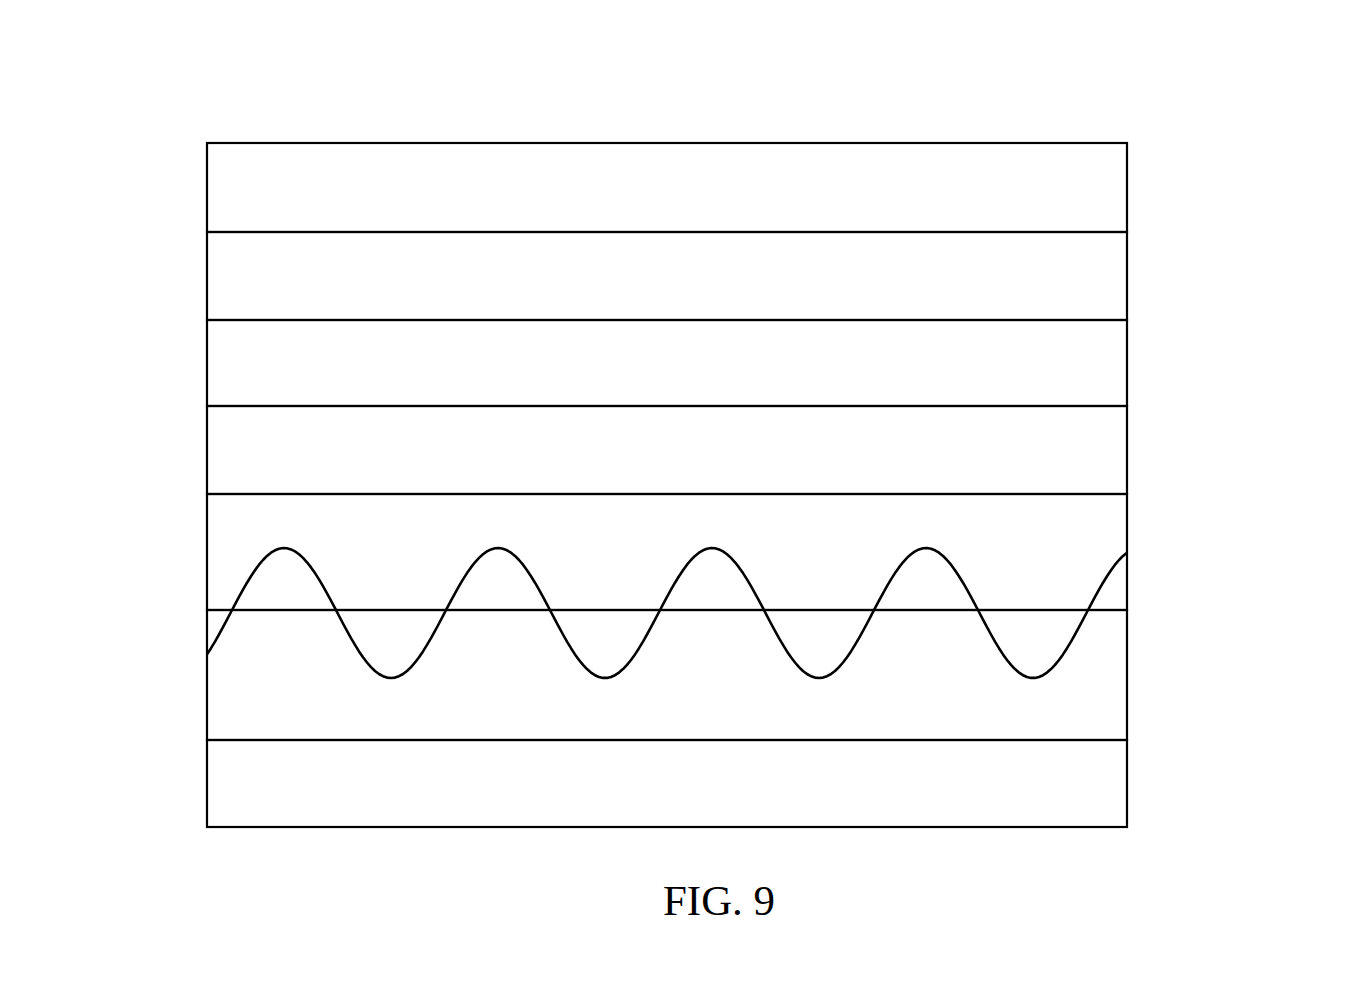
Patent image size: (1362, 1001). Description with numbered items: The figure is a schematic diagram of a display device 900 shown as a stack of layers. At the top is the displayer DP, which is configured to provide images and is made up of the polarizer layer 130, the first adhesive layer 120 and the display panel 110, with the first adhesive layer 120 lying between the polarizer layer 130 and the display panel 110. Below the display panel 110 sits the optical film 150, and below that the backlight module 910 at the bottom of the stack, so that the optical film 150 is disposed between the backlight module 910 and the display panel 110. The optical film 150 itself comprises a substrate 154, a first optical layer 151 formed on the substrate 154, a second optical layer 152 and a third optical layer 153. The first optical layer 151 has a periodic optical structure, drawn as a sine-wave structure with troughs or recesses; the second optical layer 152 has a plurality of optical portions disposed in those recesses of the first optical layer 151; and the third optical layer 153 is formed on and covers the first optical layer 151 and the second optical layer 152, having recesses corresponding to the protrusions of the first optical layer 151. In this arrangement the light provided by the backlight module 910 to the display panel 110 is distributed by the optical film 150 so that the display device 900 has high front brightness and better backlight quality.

The display device 900 is at (228, 44).
The displayer DP is at (756, 274).
The polarizer layer 130 is at (1115, 186).
The first adhesive layer 120 is at (1115, 273).
The display panel 110 is at (715, 363).
The optical film 150 is at (718, 573).
The substrate 154 is at (1115, 452).
The first optical layer 151 is at (1115, 519).
The second optical layer 152 is at (1115, 592).
The third optical layer 153 is at (715, 675).
The backlight module 910 is at (1115, 788).